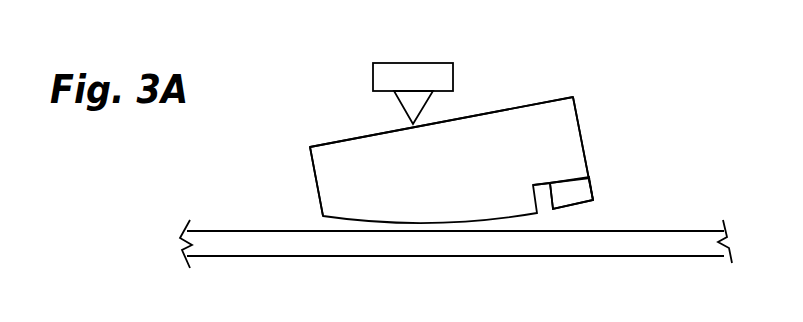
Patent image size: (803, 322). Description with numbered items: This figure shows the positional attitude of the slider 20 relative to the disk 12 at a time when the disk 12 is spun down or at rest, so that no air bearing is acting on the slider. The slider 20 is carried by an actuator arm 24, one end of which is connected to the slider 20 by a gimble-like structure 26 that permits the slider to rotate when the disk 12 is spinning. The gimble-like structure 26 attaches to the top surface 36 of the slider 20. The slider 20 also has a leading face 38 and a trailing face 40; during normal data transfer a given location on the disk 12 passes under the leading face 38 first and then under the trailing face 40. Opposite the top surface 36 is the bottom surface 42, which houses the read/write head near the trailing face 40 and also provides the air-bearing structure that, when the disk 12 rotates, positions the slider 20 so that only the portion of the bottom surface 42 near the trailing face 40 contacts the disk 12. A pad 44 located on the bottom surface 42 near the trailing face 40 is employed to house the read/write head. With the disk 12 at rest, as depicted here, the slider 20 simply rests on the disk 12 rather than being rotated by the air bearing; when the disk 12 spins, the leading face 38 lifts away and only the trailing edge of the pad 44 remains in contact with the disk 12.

The slider 20 is at (614, 85).
The actuator arm 24 is at (413, 63).
The gimble-like structure 26 is at (402, 108).
The top surface 36 is at (495, 110).
The leading face 38 is at (315, 187).
The trailing face 40 is at (583, 145).
The pad 44 is at (592, 188).
The bottom surface 42 is at (465, 232).
The disk 12 is at (627, 257).